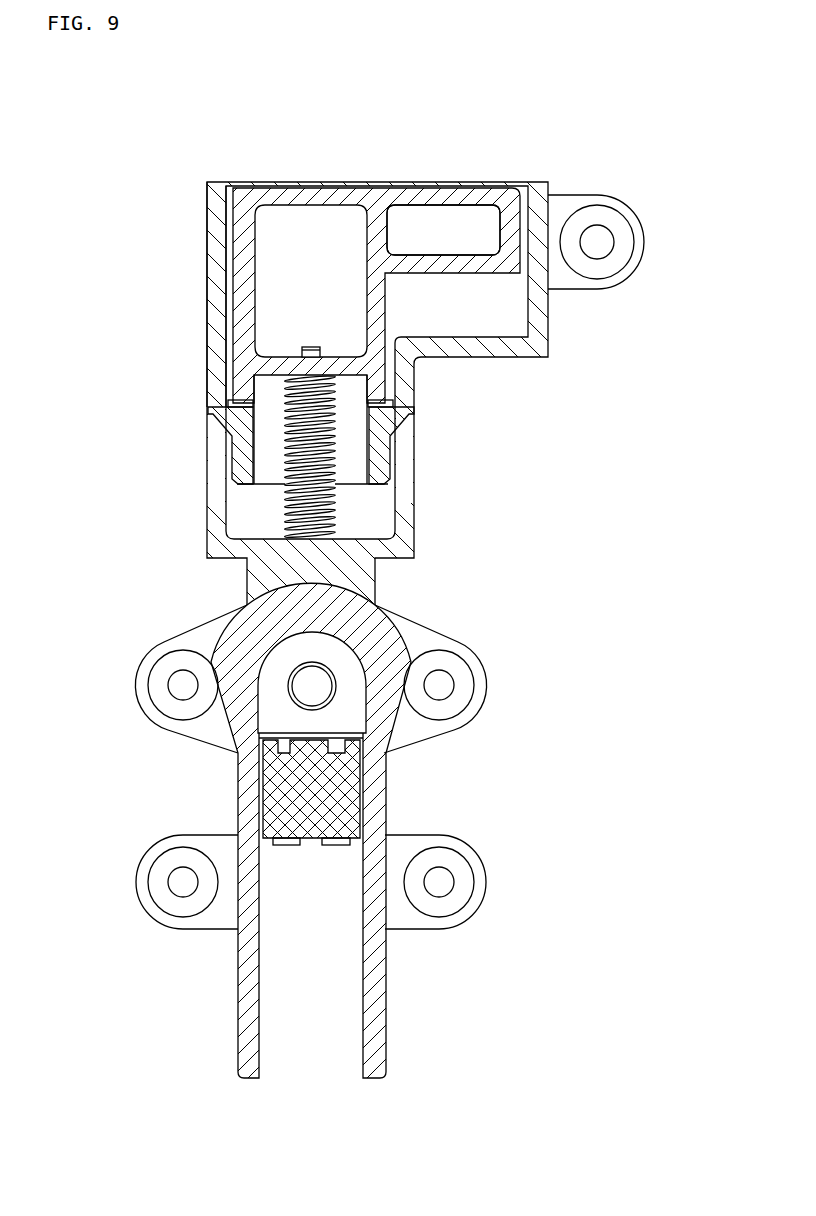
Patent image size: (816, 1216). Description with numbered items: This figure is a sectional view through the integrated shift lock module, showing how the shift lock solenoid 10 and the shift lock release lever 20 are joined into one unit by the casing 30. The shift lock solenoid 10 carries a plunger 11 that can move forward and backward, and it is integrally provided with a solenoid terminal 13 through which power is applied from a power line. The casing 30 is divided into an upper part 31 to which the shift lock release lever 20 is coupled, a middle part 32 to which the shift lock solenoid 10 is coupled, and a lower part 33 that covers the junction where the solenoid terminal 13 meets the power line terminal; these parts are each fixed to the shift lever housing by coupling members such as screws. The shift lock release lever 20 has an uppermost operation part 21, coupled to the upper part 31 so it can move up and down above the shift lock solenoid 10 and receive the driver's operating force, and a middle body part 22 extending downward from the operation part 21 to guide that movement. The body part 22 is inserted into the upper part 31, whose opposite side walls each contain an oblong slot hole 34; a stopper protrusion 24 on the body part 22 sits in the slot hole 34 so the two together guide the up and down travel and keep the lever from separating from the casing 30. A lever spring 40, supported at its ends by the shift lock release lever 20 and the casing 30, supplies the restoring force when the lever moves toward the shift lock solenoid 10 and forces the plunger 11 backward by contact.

The shift lock solenoid 10 is at (343, 713).
The plunger 11 is at (312, 684).
The solenoid terminal 13 is at (330, 802).
The shift lock release lever 20 is at (273, 171).
The operation part 21 is at (440, 232).
The body part 22 is at (268, 391).
The stopper protrusion 24 is at (240, 428).
The casing 30 is at (556, 356).
The upper part 31 is at (216, 286).
The middle part 32 is at (212, 718).
The lower part 33 is at (246, 880).
The slot hole 34 is at (220, 474).
The lever spring 40 is at (285, 510).